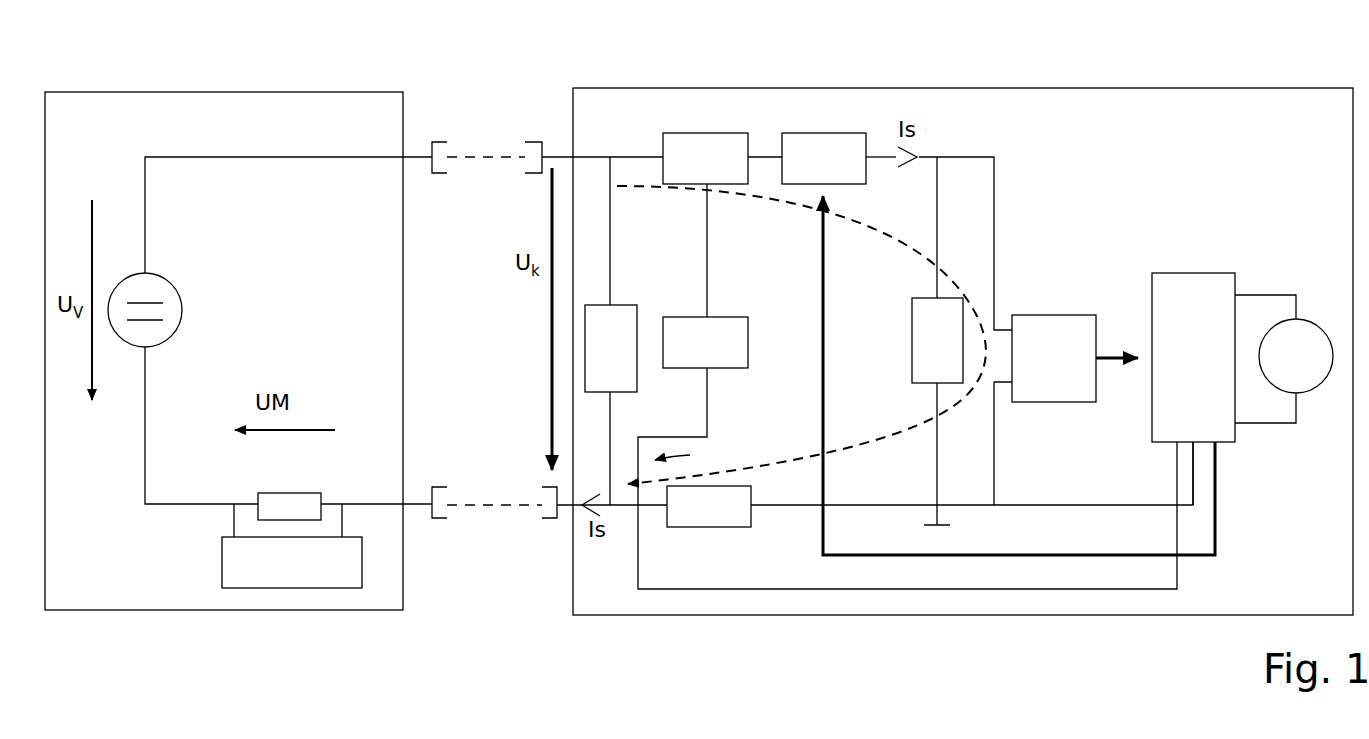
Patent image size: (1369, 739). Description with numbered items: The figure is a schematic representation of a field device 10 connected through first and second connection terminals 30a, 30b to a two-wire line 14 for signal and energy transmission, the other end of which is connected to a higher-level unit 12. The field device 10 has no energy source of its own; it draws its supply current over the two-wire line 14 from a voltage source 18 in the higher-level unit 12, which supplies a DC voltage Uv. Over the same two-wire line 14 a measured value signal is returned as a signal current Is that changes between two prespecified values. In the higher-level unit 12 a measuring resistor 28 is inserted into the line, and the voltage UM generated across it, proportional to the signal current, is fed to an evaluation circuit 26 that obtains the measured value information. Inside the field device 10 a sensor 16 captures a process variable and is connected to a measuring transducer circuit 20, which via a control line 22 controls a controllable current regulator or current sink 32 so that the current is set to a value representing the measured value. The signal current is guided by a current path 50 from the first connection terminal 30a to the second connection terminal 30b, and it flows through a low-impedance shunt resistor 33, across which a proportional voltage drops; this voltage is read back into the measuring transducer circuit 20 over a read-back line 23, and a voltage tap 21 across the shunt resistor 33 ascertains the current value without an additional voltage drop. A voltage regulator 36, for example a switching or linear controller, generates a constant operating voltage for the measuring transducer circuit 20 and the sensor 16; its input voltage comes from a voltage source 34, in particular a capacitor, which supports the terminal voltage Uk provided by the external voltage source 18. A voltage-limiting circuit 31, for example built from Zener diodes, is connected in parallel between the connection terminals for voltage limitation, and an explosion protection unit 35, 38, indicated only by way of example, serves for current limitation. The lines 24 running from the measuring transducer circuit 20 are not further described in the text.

The field device 10 is at (734, 77).
The higher-level unit 12 is at (190, 78).
The two-wire line 14 is at (499, 175).
The sensor 16 is at (1279, 370).
The voltage source 18 is at (178, 283).
The measuring transducer circuit 20 is at (1176, 371).
The voltage tap 21 is at (690, 454).
The control line 22 is at (1099, 548).
The read-back line 23 is at (794, 584).
The motor supply lines 24 is at (1216, 450).
The evaluation circuit 26 is at (275, 577).
The measuring resistor 28 is at (288, 484).
The first connection terminal 30a is at (532, 133).
The second connection terminal 30b is at (544, 481).
The voltage-limiting circuit 31 is at (594, 361).
The current regulator 32 is at (807, 173).
The shunt resistor 33 is at (692, 521).
The voltage source 34 is at (920, 354).
The explosion protection unit 35 is at (688, 357).
The voltage regulator 36 is at (1037, 371).
The explosion protection unit 38 is at (688, 173).
The current path 50 is at (916, 420).